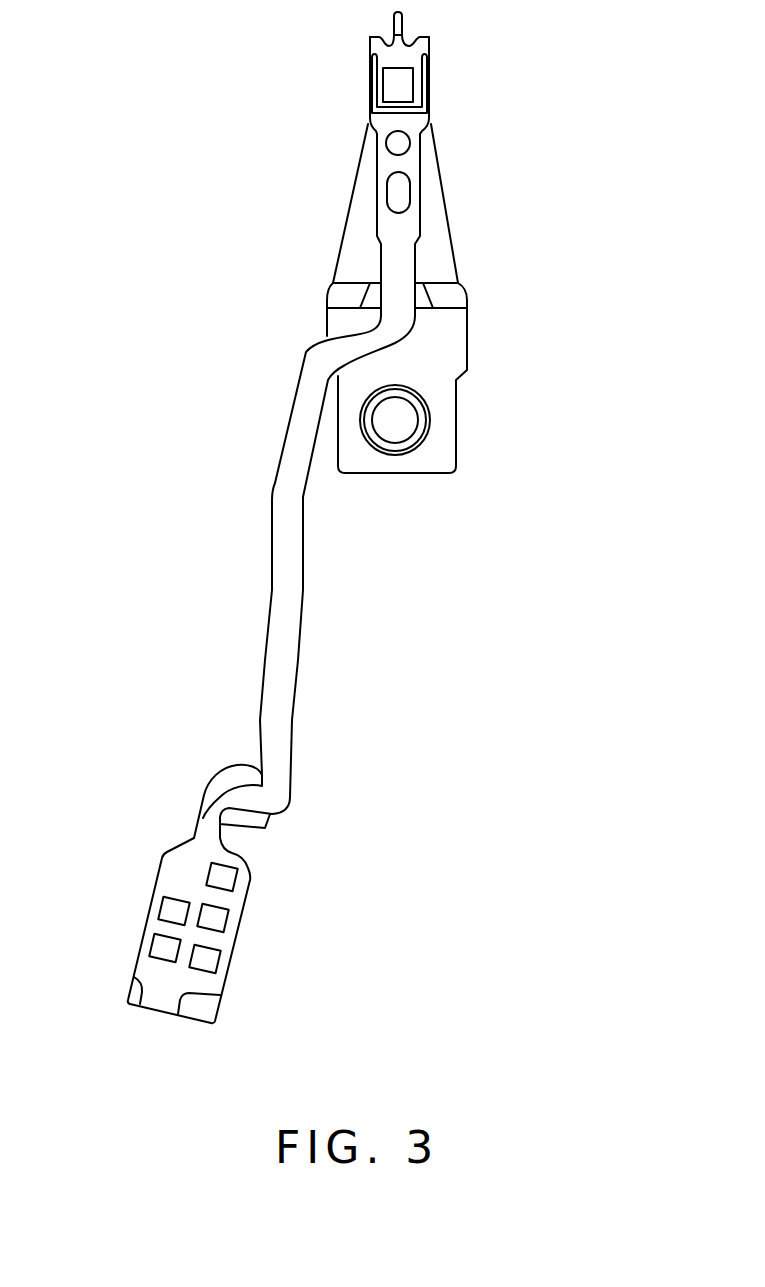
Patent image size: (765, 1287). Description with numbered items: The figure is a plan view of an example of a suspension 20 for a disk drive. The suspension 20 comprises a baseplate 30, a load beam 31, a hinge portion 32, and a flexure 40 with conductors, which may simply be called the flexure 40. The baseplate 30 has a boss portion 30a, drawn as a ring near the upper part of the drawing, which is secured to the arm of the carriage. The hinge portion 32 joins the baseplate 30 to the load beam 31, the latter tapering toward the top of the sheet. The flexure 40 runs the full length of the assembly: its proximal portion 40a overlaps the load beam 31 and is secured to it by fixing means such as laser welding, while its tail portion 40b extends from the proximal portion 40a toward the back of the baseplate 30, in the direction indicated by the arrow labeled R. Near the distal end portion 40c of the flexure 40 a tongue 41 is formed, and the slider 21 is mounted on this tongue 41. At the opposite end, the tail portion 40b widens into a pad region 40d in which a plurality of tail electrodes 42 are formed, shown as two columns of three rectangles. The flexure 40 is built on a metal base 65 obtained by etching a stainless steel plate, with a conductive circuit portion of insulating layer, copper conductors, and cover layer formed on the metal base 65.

The suspension 20 is at (247, 284).
The slider 21 is at (391, 83).
The baseplate 30 is at (457, 345).
The boss portion 30a is at (423, 423).
The load beam 31 is at (437, 223).
The hinge portion 32 is at (452, 297).
The flexure 40 is at (264, 484).
The proximal portion 40a is at (387, 163).
The tail portion 40b is at (283, 755).
The distal end portion 40c is at (421, 38).
The connection pad 40d is at (160, 1013).
The tongue 41 is at (400, 105).
The tail electrodes 42 is at (158, 950).
The metal base 65 is at (210, 1005).